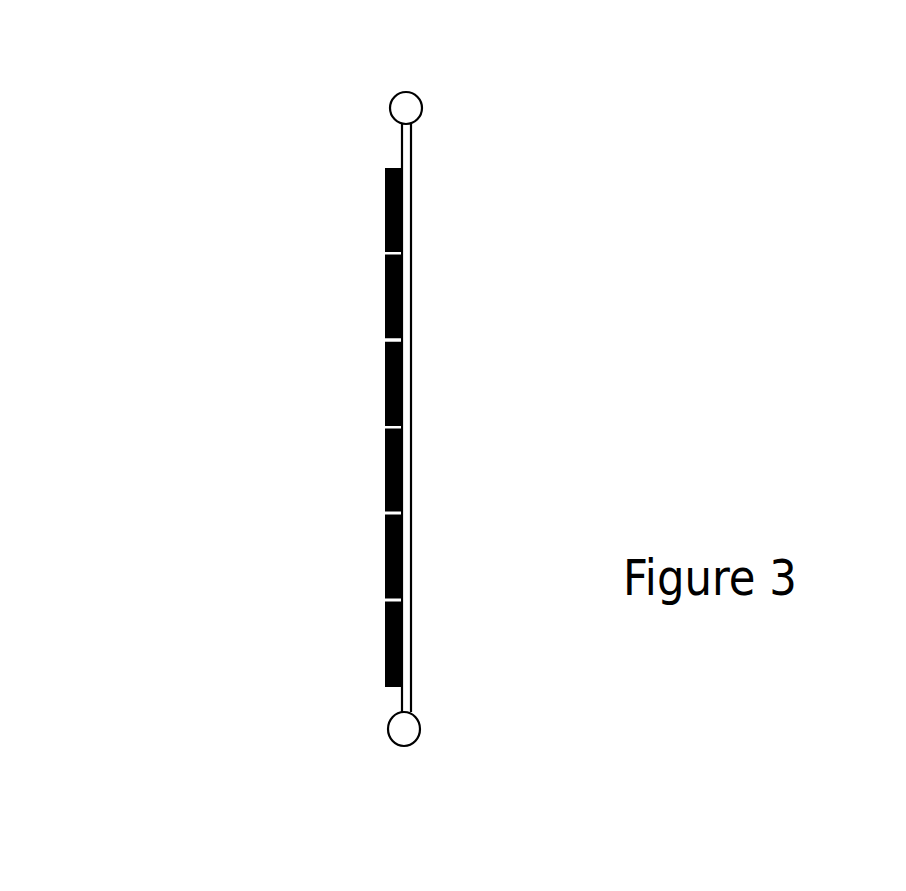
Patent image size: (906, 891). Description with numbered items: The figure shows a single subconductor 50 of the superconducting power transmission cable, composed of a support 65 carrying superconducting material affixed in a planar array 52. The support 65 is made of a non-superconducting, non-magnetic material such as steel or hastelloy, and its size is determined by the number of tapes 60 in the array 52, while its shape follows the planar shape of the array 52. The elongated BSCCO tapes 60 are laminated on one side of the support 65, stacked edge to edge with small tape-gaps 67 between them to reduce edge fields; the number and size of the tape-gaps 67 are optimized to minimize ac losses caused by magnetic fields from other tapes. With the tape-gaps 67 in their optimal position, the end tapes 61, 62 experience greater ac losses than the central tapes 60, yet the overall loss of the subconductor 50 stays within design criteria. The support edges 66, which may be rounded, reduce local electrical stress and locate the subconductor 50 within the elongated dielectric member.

The subconductor 50 is at (472, 230).
The array 52 is at (305, 475).
The tapes 60 is at (385, 392).
The end tape 61 is at (385, 218).
The end tape 62 is at (385, 642).
The support 65 is at (406, 158).
The support edges 66 is at (405, 108).
The tape-gaps 67 is at (396, 339).